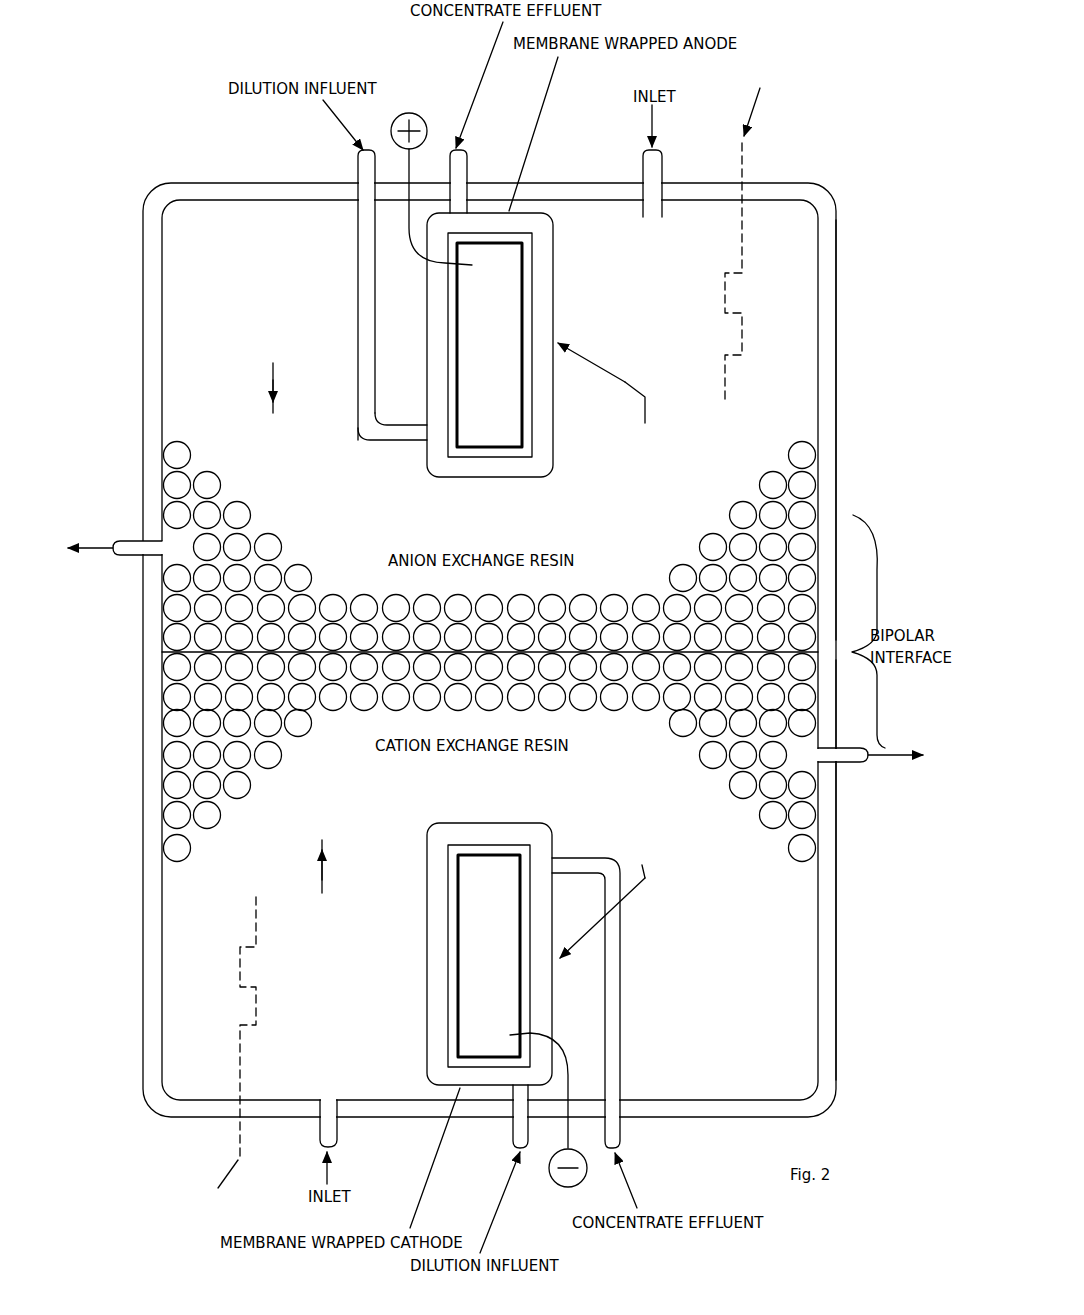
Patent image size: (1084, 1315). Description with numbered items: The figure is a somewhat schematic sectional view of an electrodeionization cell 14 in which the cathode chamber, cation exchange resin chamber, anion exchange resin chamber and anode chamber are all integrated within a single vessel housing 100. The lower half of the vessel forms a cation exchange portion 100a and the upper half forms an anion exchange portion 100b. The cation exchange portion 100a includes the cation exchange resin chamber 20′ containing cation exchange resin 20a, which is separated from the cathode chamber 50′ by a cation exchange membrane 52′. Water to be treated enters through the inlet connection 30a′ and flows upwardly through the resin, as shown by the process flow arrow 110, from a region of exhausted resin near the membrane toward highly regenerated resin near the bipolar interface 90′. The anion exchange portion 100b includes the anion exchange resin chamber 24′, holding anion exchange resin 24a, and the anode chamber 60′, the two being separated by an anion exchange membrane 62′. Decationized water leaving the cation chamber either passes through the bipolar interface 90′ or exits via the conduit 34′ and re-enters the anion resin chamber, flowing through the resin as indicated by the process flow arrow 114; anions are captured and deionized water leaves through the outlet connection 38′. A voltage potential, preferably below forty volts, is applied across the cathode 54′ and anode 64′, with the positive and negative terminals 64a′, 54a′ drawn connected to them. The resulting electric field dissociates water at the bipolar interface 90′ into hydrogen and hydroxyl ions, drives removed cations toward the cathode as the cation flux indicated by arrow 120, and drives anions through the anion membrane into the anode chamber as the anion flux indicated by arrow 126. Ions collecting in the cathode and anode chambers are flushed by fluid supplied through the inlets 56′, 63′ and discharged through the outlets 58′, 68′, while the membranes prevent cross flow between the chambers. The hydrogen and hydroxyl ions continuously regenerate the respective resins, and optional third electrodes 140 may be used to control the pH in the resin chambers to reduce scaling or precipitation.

The electrodeionization cell 14 is at (859, 280).
The vessel housing 100 is at (838, 262).
The cation exchange portion 100a is at (840, 898).
The anion exchange portion 100b is at (839, 366).
The anion exchange resin chamber 24′ is at (192, 397).
The anion exchange resin 24a is at (277, 536).
The cation exchange resin chamber 20′ is at (780, 1012).
The cation exchange resin 20a is at (276, 767).
The bipolar interface 90′ is at (177, 651).
The process flow arrow 114 is at (271, 386).
The process flow arrow 110 is at (320, 871).
The anode chamber inlet 63′ is at (363, 170).
The anode chamber outlet 68′ is at (468, 167).
The conduit 34′ is at (648, 170).
The outlet connection 38′ is at (125, 555).
The positive terminal lead 64a′ is at (418, 114).
The anion exchange membrane 62′ is at (542, 270).
The anode chamber 60′ is at (452, 452).
The anode 64′ is at (498, 352).
The flow arrow 126 is at (625, 382).
The optional third electrodes 140 is at (745, 170).
The cation exchange membrane 52′ is at (546, 836).
The cathode chamber 50′ is at (453, 852).
The cathode 54′ is at (488, 948).
The negative terminal lead 54a′ is at (559, 1180).
The arrow 120 is at (628, 896).
The cathode chamber outlet 58′ is at (614, 1130).
The cathode chamber inlet 56′ is at (518, 1133).
The inlet connection 30a′ is at (328, 1132).